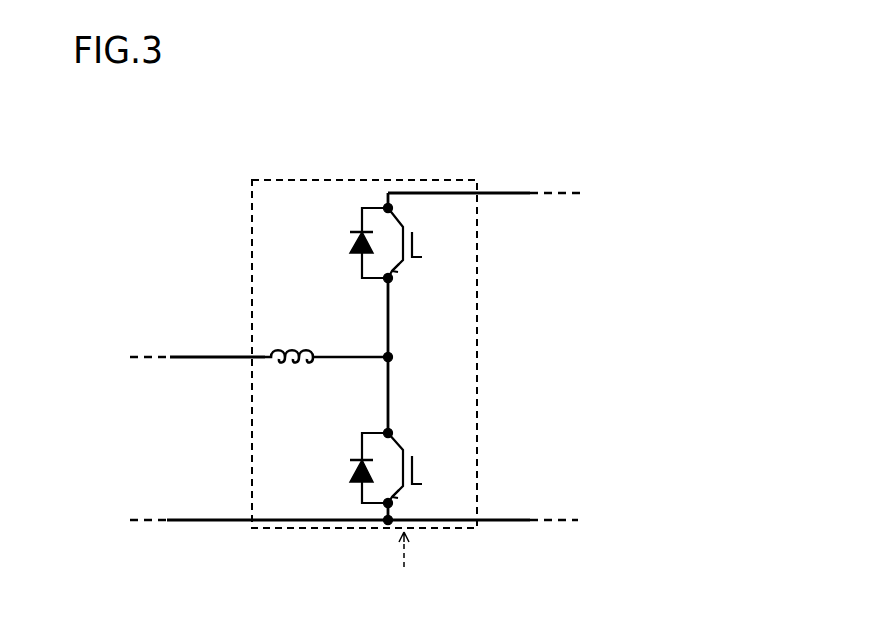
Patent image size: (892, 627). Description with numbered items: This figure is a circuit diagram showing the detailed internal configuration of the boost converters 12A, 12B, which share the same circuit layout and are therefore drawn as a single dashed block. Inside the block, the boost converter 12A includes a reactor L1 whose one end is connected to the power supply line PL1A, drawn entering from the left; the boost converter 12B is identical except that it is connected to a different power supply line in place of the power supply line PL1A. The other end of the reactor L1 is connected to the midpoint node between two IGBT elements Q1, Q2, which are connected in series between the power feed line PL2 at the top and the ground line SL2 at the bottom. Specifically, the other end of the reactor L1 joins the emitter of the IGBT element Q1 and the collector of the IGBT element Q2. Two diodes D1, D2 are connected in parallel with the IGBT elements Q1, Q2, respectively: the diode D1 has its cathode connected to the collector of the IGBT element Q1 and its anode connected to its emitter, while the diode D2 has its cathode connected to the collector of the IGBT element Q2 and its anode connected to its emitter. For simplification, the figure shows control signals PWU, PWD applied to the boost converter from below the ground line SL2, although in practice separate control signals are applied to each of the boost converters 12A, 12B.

The boost converter 12A is at (326, 315).
The boost converter 12B is at (259, 178).
The power feed line PL2 is at (517, 192).
The power supply line PL1A is at (197, 314).
The reactor L1 is at (326, 339).
The IGBT element Q1 is at (420, 243).
The IGBT element Q2 is at (420, 468).
The diode D1 is at (350, 243).
The diode D2 is at (350, 468).
The ground line SL2 is at (200, 520).
The control signal PWU is at (405, 562).
The control signal PWD is at (404, 549).